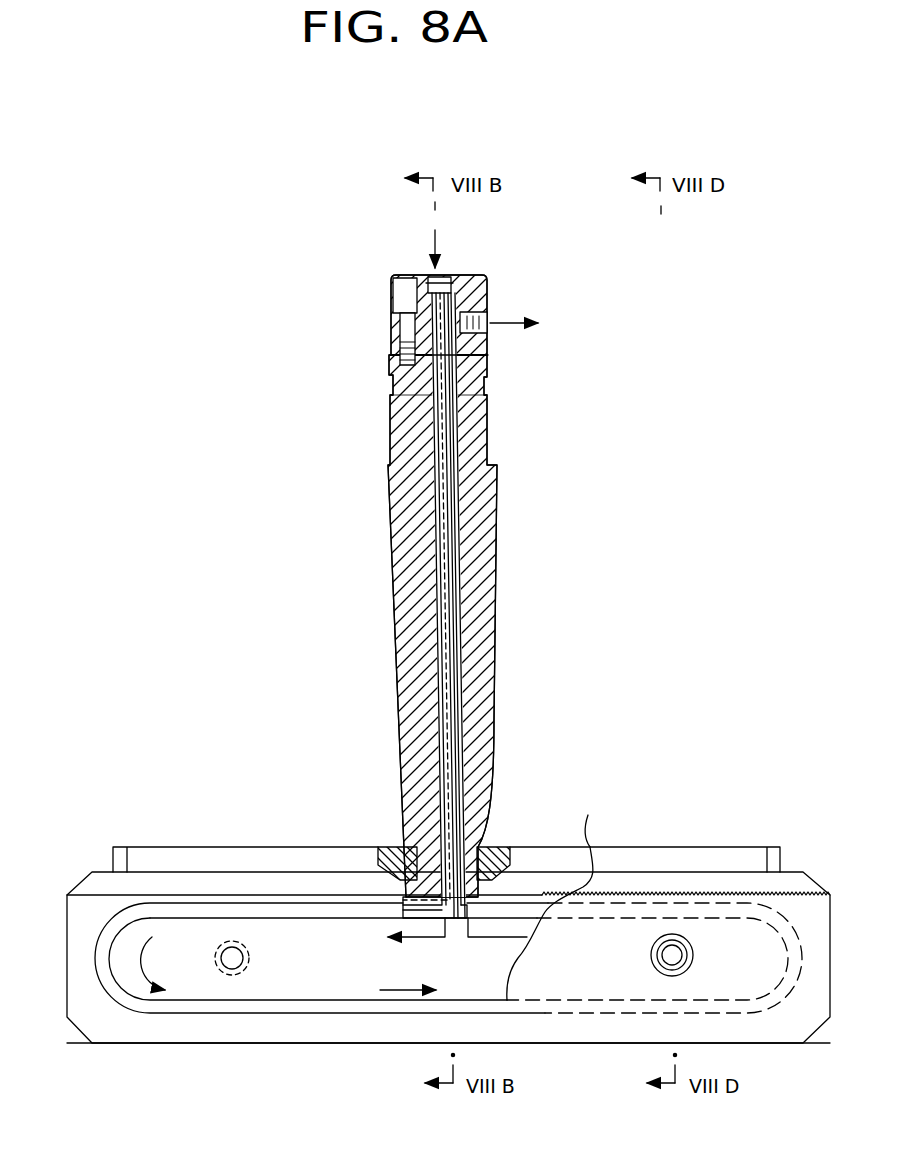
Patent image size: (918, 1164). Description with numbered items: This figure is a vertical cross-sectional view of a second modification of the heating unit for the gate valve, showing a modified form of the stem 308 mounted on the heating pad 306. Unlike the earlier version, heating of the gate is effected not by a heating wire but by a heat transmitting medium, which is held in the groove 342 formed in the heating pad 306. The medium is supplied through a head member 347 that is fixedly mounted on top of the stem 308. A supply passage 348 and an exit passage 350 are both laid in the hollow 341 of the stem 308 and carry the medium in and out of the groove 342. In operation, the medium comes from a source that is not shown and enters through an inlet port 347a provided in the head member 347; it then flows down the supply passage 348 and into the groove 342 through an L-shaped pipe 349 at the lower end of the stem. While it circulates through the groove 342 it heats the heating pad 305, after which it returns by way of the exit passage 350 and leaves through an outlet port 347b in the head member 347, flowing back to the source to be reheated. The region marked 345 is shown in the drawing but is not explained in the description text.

The heating pad 305 is at (588, 1048).
The heating pad 306 is at (298, 1046).
The groove 342 is at (213, 1045).
The broken-out section region 345 is at (582, 817).
The stem 308 is at (480, 568).
The hollow 341 is at (455, 652).
The head member 347 is at (435, 321).
The inlet port 347a is at (442, 275).
The outlet port 347b is at (462, 328).
The supply passage 348 is at (453, 437).
The L-shaped pipe 349 is at (390, 878).
The exit passage 350 is at (407, 418).